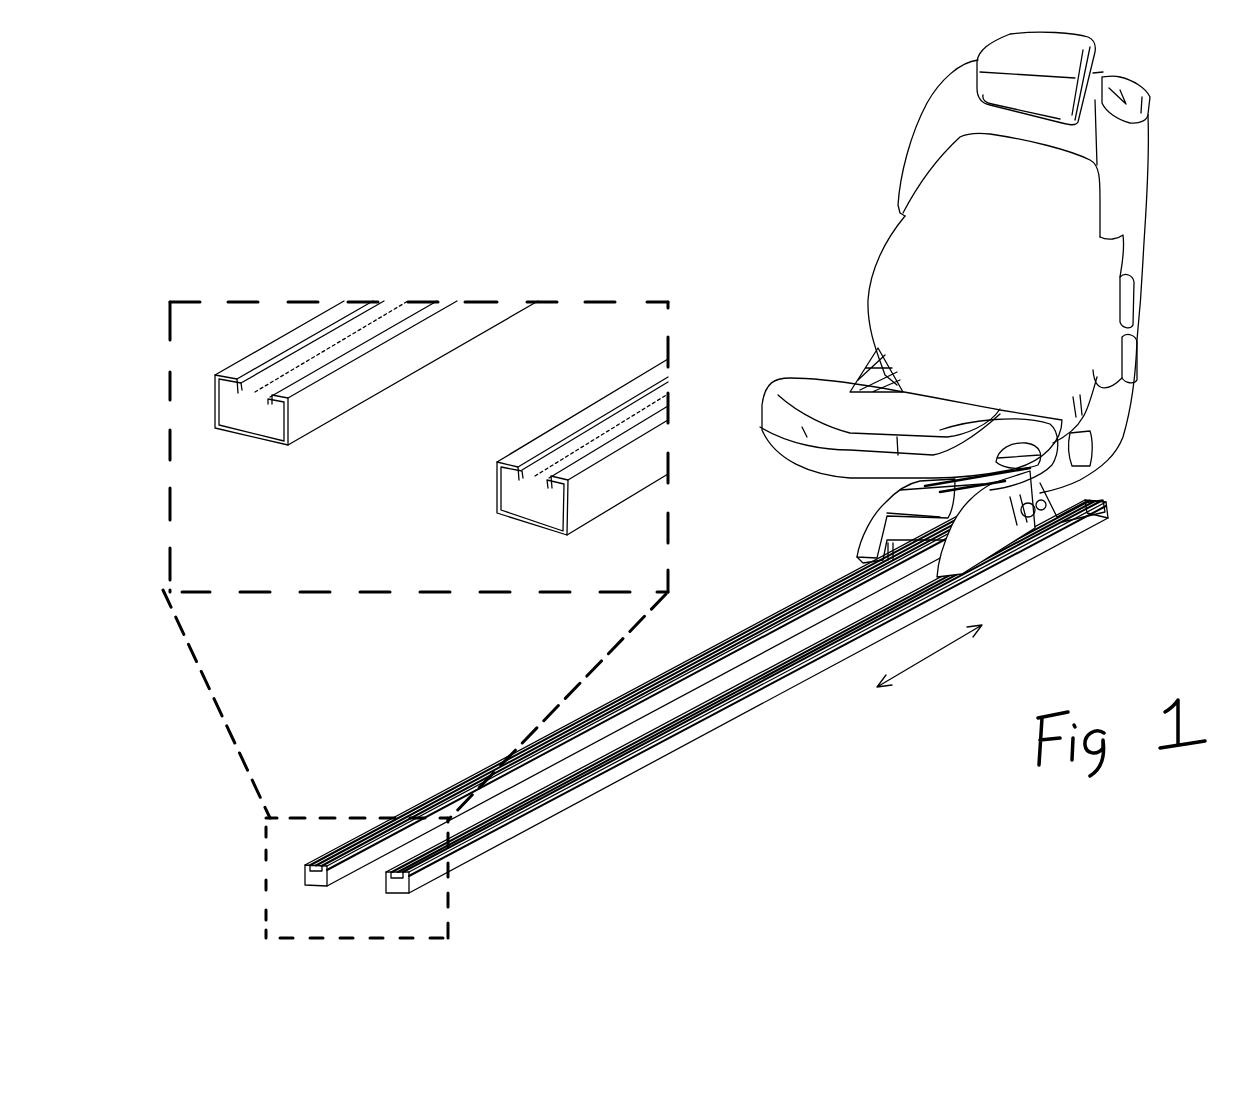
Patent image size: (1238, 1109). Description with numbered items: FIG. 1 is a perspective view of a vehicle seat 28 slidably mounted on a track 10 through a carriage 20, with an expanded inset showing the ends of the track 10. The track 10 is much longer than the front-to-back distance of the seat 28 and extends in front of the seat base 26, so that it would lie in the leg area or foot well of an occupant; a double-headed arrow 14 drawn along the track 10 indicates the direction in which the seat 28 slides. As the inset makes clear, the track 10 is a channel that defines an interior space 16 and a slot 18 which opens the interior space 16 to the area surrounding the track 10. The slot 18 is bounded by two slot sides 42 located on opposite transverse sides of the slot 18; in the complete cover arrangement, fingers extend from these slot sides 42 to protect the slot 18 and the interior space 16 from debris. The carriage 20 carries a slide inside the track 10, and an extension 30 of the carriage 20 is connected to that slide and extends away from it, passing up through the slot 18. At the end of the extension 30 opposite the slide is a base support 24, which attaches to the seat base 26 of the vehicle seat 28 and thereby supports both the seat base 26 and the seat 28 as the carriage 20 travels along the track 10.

The track 10 is at (473, 323).
The direction of seat travel 14 is at (933, 657).
The interior space 16 is at (247, 422).
The slot 18 is at (397, 308).
The carriage 20 is at (1007, 545).
The base support 24 is at (1057, 490).
The seat base 26 is at (837, 457).
The seat 28 is at (820, 218).
The extension 30 is at (1010, 524).
The slot side 42 is at (243, 367).